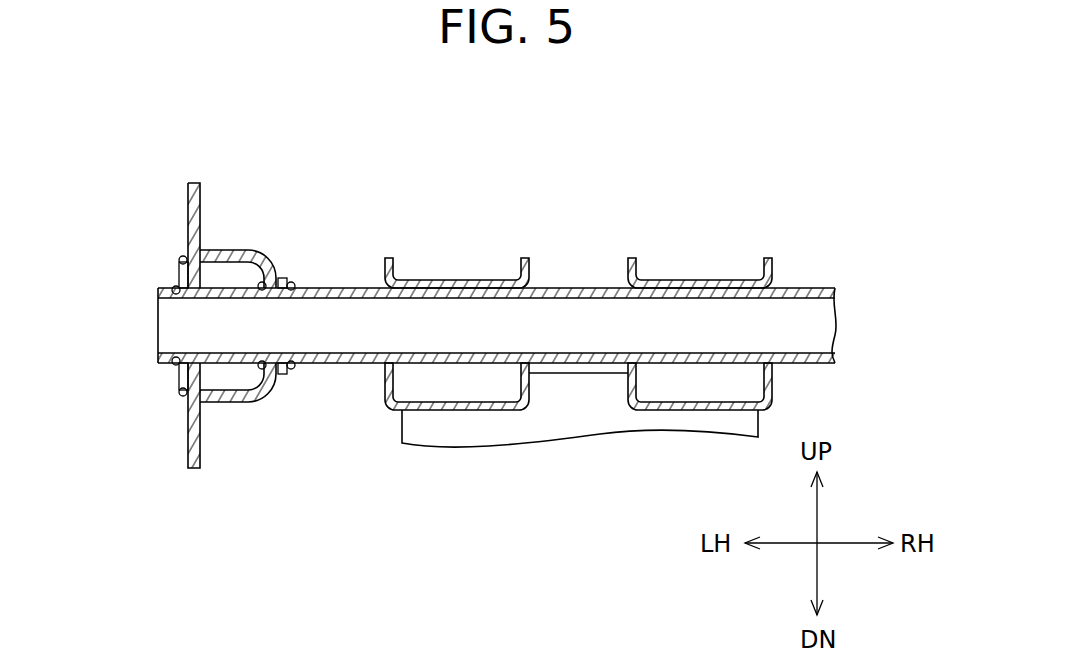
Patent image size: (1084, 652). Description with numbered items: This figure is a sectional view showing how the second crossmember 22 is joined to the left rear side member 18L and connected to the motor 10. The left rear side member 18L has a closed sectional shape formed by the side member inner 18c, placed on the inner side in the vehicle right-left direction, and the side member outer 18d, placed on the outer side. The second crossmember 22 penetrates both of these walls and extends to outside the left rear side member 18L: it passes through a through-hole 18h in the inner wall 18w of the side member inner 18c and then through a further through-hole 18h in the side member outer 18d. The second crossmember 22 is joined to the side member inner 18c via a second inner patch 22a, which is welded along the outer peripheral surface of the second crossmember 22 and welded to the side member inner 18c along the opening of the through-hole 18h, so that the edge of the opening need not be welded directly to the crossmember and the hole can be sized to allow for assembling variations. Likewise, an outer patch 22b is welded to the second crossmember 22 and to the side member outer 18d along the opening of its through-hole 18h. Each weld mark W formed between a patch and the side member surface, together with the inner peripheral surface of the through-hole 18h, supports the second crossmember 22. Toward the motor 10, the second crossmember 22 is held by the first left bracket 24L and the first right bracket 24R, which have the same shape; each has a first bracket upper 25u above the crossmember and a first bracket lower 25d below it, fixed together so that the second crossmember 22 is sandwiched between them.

The motor 10 is at (568, 433).
The left rear side member 18L is at (145, 145).
The side member inner 18c is at (219, 252).
The side member outer 18d is at (188, 205).
The through-hole 18h is at (190, 298).
The inner wall 18w is at (256, 400).
The second crossmember 22 is at (810, 328).
The second inner patch 22a is at (288, 270).
The outer patch 22b is at (182, 270).
The first left bracket 24L is at (490, 190).
The first right bracket 24R is at (733, 190).
The first bracket upper 25u is at (533, 268).
The first bracket lower 25d is at (447, 410).
The weld mark W is at (268, 283).